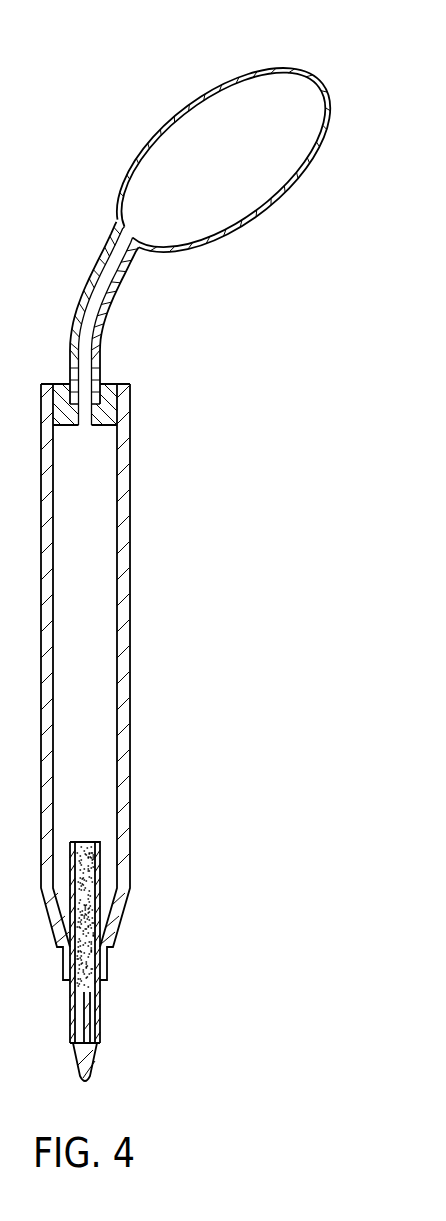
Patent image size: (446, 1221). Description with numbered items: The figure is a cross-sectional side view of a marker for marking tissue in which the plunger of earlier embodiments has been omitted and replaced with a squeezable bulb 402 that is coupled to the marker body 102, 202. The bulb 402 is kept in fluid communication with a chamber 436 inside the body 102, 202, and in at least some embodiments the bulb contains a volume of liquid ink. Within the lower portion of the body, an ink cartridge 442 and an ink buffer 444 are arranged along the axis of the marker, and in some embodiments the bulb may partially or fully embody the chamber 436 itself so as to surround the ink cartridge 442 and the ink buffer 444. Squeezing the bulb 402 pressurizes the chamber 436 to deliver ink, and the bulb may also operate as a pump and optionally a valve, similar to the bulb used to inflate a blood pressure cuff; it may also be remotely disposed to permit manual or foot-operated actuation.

The squeezable bulb 402 is at (284, 214).
The body 102 is at (170, 732).
The body 202 is at (170, 732).
The chamber 436 is at (105, 646).
The ink cartridge 442 is at (112, 851).
The ink buffer 444 is at (85, 925).